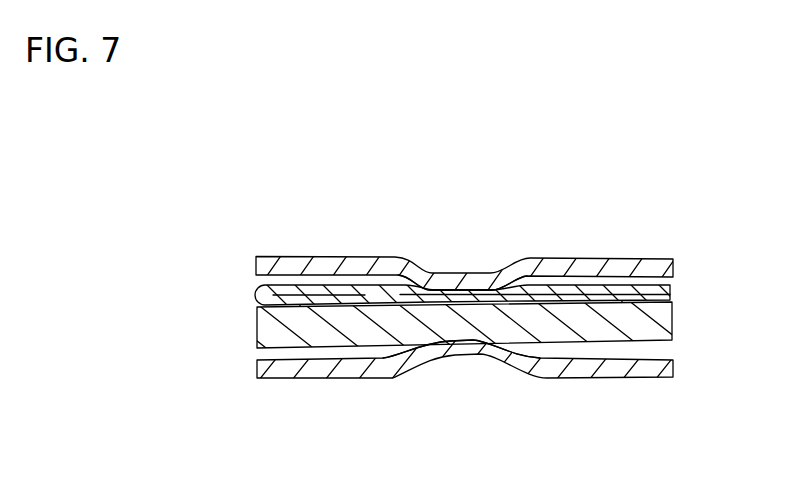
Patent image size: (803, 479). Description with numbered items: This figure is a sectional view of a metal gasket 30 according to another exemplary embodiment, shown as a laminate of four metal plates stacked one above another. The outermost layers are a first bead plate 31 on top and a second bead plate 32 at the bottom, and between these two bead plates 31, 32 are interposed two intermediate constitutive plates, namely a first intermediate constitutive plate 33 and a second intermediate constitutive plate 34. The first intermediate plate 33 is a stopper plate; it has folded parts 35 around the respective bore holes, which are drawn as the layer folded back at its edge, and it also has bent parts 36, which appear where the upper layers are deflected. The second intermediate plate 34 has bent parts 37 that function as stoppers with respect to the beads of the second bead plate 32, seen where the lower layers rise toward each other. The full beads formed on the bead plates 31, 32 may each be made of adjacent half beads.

The metal gasket 30 is at (516, 247).
The first bead plate 31 is at (665, 259).
The second bead plate 32 is at (665, 368).
The first intermediate constitutive plate 33 is at (663, 295).
The second intermediate constitutive plate 34 is at (660, 320).
The folded parts 35 is at (300, 305).
The bent parts 36 is at (431, 268).
The bent parts 37 is at (430, 343).